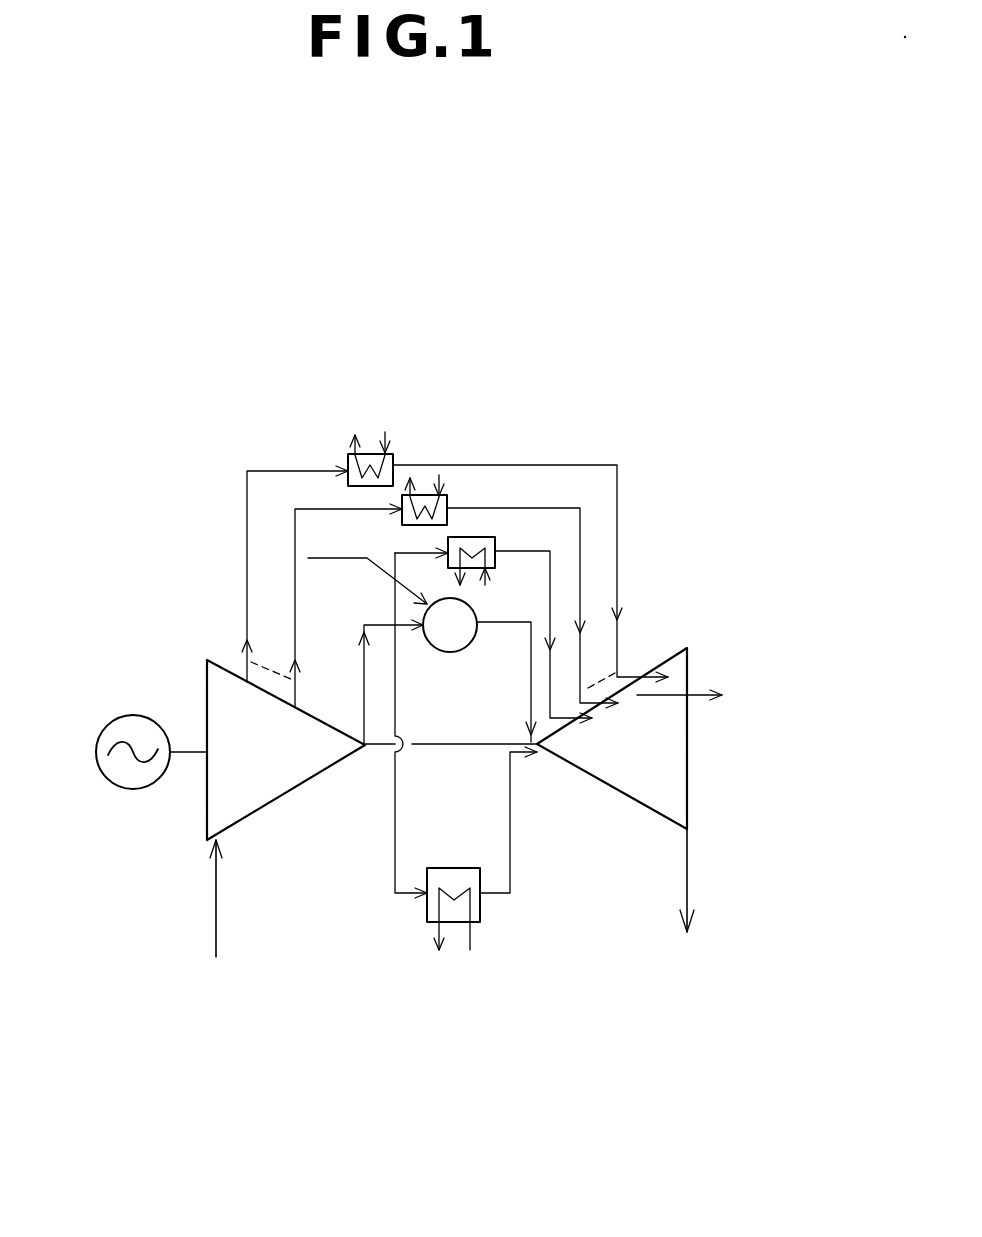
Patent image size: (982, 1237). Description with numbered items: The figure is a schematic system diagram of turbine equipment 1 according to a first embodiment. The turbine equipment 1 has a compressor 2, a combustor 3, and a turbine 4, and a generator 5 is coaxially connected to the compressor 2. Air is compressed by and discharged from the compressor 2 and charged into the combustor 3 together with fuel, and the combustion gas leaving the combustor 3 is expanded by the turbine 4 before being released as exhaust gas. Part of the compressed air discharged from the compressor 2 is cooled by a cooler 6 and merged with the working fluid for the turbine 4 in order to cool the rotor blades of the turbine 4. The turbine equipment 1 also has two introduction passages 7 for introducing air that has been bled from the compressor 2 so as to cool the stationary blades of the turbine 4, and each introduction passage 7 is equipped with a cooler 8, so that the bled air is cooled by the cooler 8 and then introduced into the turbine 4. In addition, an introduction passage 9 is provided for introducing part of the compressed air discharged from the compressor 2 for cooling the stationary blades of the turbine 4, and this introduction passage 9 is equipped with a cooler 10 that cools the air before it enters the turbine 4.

The turbine equipment 1 is at (347, 930).
The compressor 2 is at (233, 710).
The combustor 3 is at (433, 652).
The turbine 4 is at (665, 772).
The generator 5 is at (123, 789).
The cooler 6 is at (482, 908).
The introduction passage 7 is at (617, 491).
The cooler 8 is at (347, 460).
The introduction passage 9 is at (550, 603).
The cooler 10 is at (478, 537).